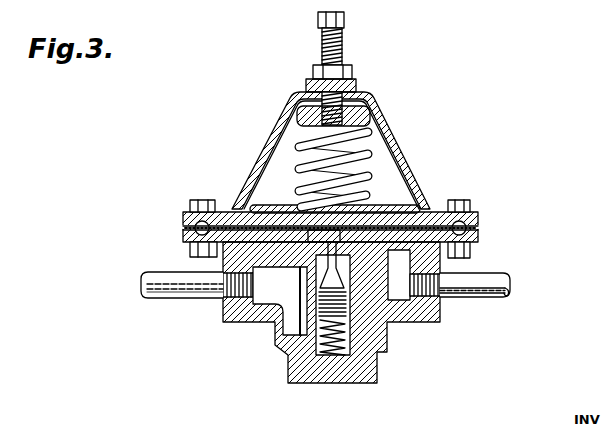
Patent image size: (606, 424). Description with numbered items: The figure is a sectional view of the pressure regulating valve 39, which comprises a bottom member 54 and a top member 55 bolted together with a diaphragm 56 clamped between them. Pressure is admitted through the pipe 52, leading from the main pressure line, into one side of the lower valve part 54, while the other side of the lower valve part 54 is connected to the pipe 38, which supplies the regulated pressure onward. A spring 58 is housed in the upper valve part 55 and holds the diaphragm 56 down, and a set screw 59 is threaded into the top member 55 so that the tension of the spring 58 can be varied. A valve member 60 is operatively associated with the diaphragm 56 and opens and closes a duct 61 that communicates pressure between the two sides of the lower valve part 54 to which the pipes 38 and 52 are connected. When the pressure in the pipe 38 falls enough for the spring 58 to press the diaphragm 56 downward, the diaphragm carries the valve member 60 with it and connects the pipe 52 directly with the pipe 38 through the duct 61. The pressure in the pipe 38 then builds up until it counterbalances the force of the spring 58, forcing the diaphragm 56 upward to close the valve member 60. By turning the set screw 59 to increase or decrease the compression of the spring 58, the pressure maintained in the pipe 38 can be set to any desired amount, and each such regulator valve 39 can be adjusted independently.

The pipe 38 is at (494, 298).
The pressure regulating valve 39 is at (408, 151).
The pipe 52 is at (186, 299).
The bottom member 54 is at (441, 270).
The top member 55 is at (416, 181).
The diaphragm 56 is at (428, 210).
The spring 58 is at (372, 151).
The set screw 59 is at (344, 46).
The valve member 60 is at (413, 232).
The duct 61 is at (299, 270).